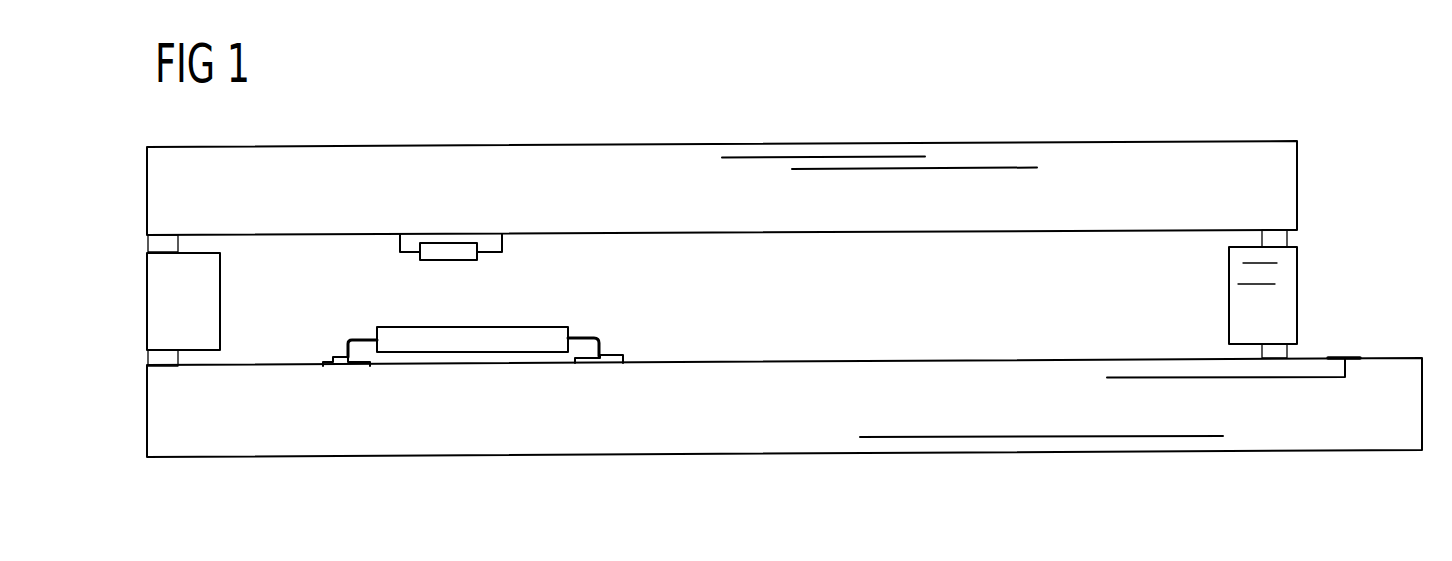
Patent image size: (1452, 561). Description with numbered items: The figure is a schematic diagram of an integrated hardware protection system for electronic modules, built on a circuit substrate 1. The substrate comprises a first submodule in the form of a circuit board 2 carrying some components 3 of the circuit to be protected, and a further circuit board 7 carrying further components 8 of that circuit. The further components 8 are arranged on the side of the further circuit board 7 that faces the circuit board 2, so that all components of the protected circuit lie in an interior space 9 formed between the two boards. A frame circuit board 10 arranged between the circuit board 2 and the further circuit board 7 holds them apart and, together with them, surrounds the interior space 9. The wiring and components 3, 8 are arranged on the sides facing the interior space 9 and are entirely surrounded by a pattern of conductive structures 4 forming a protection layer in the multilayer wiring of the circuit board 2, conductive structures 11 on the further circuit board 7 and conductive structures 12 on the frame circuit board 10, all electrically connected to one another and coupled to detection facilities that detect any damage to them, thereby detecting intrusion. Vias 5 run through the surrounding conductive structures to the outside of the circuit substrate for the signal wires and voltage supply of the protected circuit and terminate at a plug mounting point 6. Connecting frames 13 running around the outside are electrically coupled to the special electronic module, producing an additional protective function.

The circuit substrate 1 is at (124, 142).
The circuit board 2 is at (151, 416).
The components 3 is at (418, 338).
The conductive structures 4 is at (1252, 378).
The vias 5 is at (1315, 380).
The plug mounting point 6 is at (1352, 357).
The further circuit board 7 is at (1240, 152).
The further components 8 is at (450, 250).
The interior space 9 is at (709, 314).
The frame circuit board 10 is at (157, 292).
The conductive structures 11 is at (963, 168).
The conductive structures 12 is at (1280, 264).
The connecting frames 13 is at (148, 245).